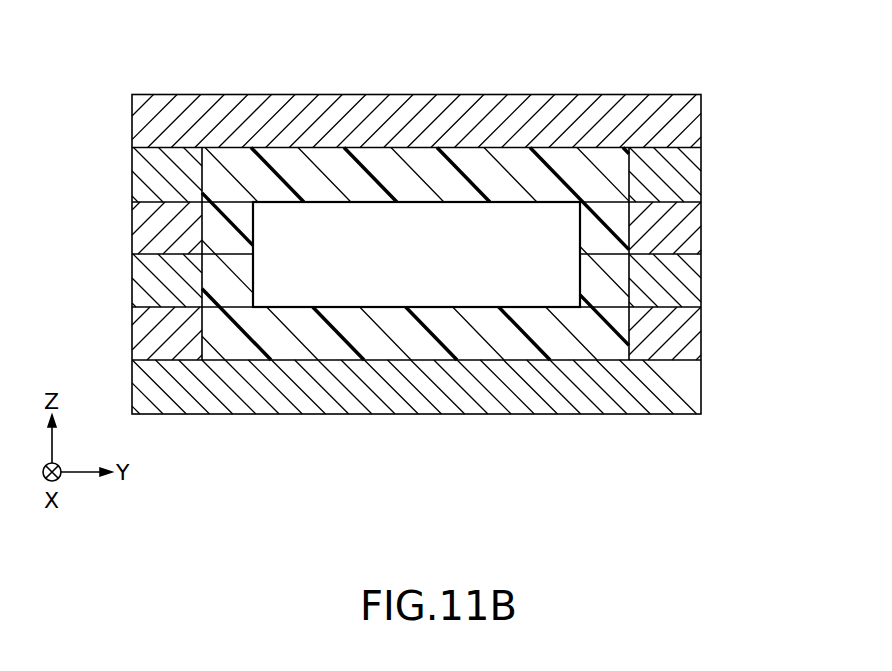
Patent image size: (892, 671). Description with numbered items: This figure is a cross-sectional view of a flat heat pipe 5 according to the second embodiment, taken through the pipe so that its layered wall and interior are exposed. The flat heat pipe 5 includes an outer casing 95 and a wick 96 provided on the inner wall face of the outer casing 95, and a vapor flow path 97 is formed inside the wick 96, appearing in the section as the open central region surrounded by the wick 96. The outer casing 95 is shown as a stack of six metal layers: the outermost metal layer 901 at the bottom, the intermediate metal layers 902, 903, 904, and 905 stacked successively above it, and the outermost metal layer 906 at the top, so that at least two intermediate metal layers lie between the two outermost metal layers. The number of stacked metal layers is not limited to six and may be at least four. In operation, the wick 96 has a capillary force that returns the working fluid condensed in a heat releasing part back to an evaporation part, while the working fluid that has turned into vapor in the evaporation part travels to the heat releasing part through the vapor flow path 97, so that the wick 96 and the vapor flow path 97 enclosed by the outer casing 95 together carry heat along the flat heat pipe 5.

The flat heat pipe 5 is at (165, 90).
The outer casing 95 is at (813, 90).
The wick 96 is at (370, 330).
The vapor flow path 97 is at (463, 255).
The outermost metal layer 901 is at (703, 385).
The intermediate metal layer 902 is at (703, 332).
The intermediate metal layer 903 is at (703, 278).
The intermediate metal layer 904 is at (703, 225).
The intermediate metal layer 905 is at (703, 172).
The outermost metal layer 906 is at (703, 119).